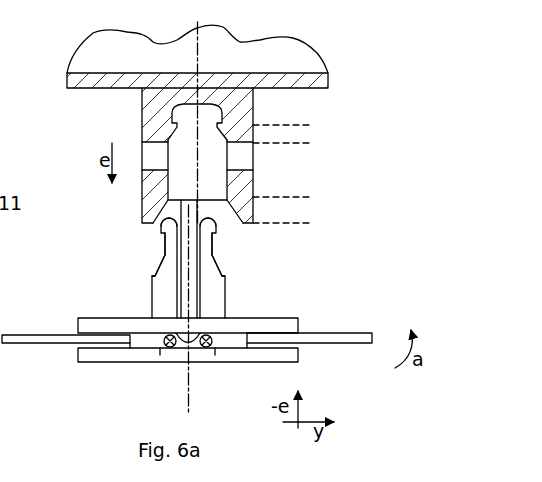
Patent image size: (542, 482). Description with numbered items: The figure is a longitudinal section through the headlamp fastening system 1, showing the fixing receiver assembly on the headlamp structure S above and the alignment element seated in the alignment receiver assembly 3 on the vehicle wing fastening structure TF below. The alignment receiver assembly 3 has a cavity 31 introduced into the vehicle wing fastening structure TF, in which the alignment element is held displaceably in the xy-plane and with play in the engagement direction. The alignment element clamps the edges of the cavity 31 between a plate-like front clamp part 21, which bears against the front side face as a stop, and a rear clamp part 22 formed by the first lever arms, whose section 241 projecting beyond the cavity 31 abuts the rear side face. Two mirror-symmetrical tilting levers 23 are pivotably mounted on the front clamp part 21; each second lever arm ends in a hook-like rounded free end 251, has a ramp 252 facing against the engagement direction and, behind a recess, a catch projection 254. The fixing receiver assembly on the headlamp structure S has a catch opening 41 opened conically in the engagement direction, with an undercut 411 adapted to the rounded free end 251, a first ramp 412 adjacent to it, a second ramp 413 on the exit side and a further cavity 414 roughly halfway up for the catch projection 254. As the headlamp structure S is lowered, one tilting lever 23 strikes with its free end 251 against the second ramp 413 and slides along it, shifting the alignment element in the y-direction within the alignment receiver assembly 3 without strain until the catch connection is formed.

The headlamp fastening system 1 is at (62, 62).
The headlamp structure S is at (235, 39).
The catch opening 41 is at (175, 153).
The undercut 411 is at (220, 110).
The first ramp 412 is at (301, 133).
The second ramp 413 is at (301, 210).
The further cavity 414 is at (243, 158).
The cavity 31 is at (229, 342).
The tilting levers 23 is at (150, 298).
The free end 251 is at (162, 228).
The ramp 252 is at (166, 248).
The catch projection 254 is at (153, 272).
The front clamp part 21 is at (290, 325).
The alignment receiver assembly 3 is at (70, 325).
The vehicle wing fastening structure TF is at (355, 338).
The rear clamp part 22 is at (192, 385).
The section of the first lever arm 241 is at (97, 357).